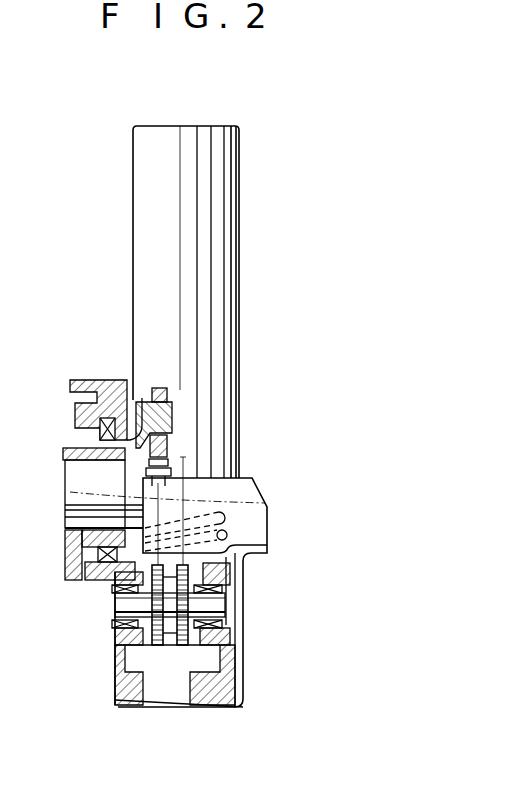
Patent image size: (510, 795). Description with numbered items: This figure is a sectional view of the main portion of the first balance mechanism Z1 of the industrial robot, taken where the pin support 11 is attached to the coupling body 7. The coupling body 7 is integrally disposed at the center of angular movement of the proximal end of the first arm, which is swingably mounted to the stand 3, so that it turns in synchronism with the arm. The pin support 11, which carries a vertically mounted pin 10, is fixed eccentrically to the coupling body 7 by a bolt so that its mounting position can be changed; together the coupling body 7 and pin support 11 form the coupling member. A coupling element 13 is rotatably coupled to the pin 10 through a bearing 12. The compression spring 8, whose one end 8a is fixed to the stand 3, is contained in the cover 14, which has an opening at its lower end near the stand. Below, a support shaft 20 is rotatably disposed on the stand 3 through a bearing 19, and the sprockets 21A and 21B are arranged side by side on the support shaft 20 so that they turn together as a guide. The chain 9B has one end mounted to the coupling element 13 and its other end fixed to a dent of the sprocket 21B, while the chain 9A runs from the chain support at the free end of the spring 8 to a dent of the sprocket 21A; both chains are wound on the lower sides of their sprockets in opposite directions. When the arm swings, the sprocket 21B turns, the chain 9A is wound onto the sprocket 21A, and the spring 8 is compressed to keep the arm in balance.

The cover 14 is at (239, 186).
The pin support 11 is at (142, 398).
The bearing 12 is at (175, 403).
The pin 10 is at (172, 420).
The coupling element 13 is at (167, 447).
The first balance mechanism Z1 is at (290, 441).
The chain 9B is at (130, 500).
The chain 9A is at (257, 501).
The compression spring 8 is at (250, 518).
The one end of the spring 8a is at (228, 534).
The coupling body 7 is at (68, 549).
The bearing 19 is at (222, 593).
The support shaft 20 is at (218, 604).
The sprocket 21B is at (153, 644).
The sprocket 21A is at (190, 641).
The stand 3 is at (123, 687).